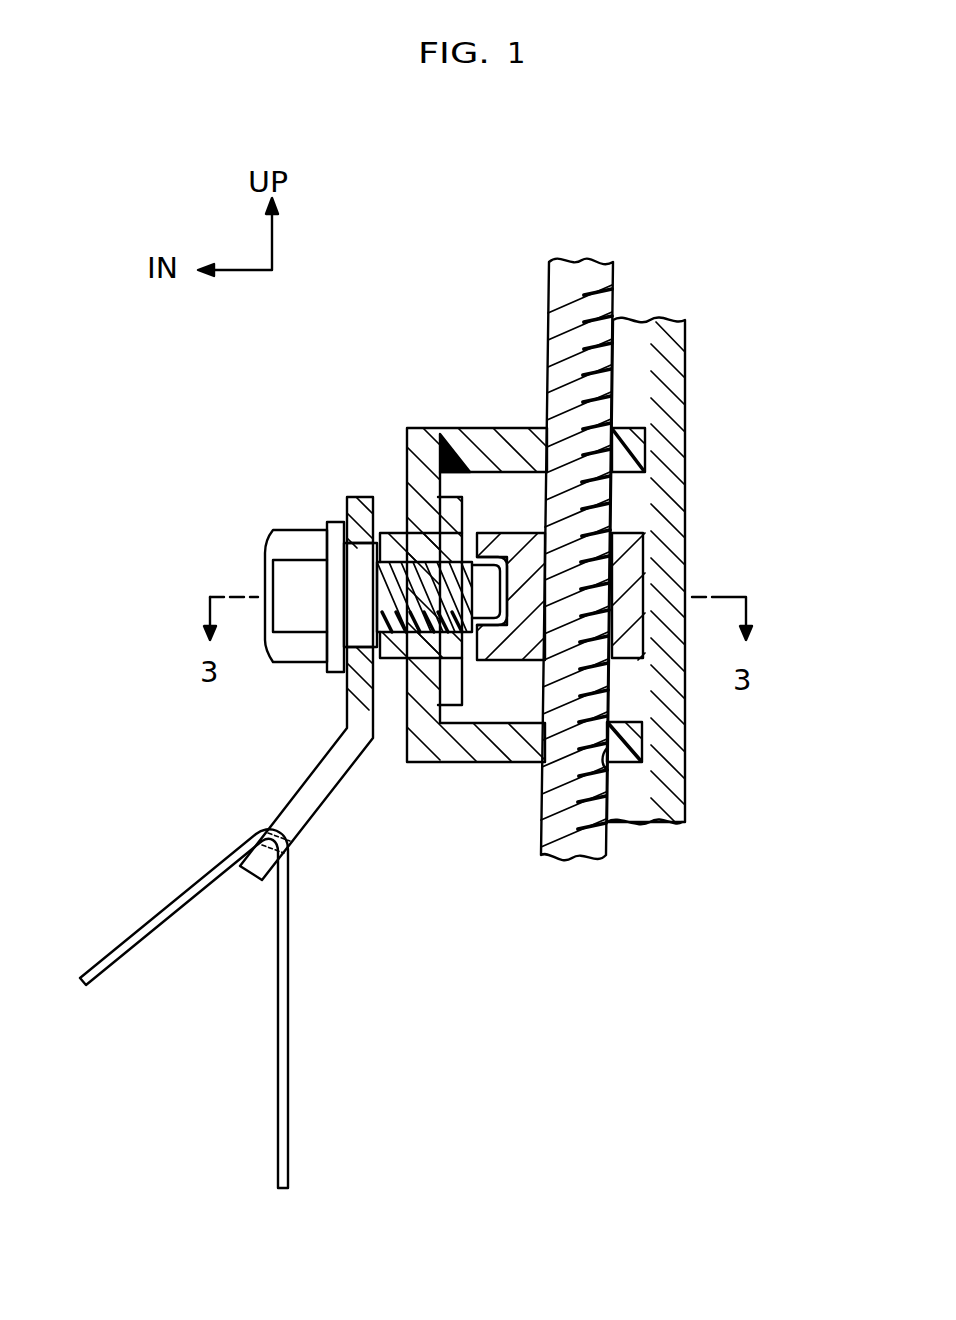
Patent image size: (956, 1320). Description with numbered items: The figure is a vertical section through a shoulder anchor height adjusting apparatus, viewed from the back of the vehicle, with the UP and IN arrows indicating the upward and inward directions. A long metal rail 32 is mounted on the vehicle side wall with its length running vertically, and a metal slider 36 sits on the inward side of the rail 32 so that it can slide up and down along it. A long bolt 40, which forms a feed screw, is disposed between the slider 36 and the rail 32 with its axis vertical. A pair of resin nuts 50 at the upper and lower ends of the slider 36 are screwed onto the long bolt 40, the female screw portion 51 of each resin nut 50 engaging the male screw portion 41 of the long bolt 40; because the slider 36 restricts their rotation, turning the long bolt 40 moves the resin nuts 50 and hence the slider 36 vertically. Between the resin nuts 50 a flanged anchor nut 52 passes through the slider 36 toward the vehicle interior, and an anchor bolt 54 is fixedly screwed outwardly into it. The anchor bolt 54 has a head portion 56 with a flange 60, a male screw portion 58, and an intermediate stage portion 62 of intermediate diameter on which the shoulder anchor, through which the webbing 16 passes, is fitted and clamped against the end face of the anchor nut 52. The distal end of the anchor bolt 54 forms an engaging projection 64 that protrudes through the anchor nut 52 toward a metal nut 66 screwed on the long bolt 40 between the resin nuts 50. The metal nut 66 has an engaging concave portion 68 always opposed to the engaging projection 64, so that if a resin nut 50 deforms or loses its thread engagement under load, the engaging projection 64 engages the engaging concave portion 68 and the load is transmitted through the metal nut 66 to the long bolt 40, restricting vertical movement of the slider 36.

The webbing 16 is at (288, 1032).
The rail 32 is at (690, 365).
The slider 36 is at (403, 748).
The long bolt 40 is at (592, 858).
The male screw portion 41 is at (612, 752).
The resin nut 50 is at (647, 450).
The female screw portion 51 is at (610, 772).
The anchor nut 52 is at (450, 510).
The anchor bolt 54 is at (263, 654).
The head portion 56 is at (293, 597).
The male screw portion 58 is at (410, 565).
The flange 60 is at (333, 533).
The intermediate stage portion 62 is at (363, 585).
The engaging projection 64 is at (493, 606).
The metal nut 66 is at (637, 570).
The engaging concave portion 68 is at (483, 556).